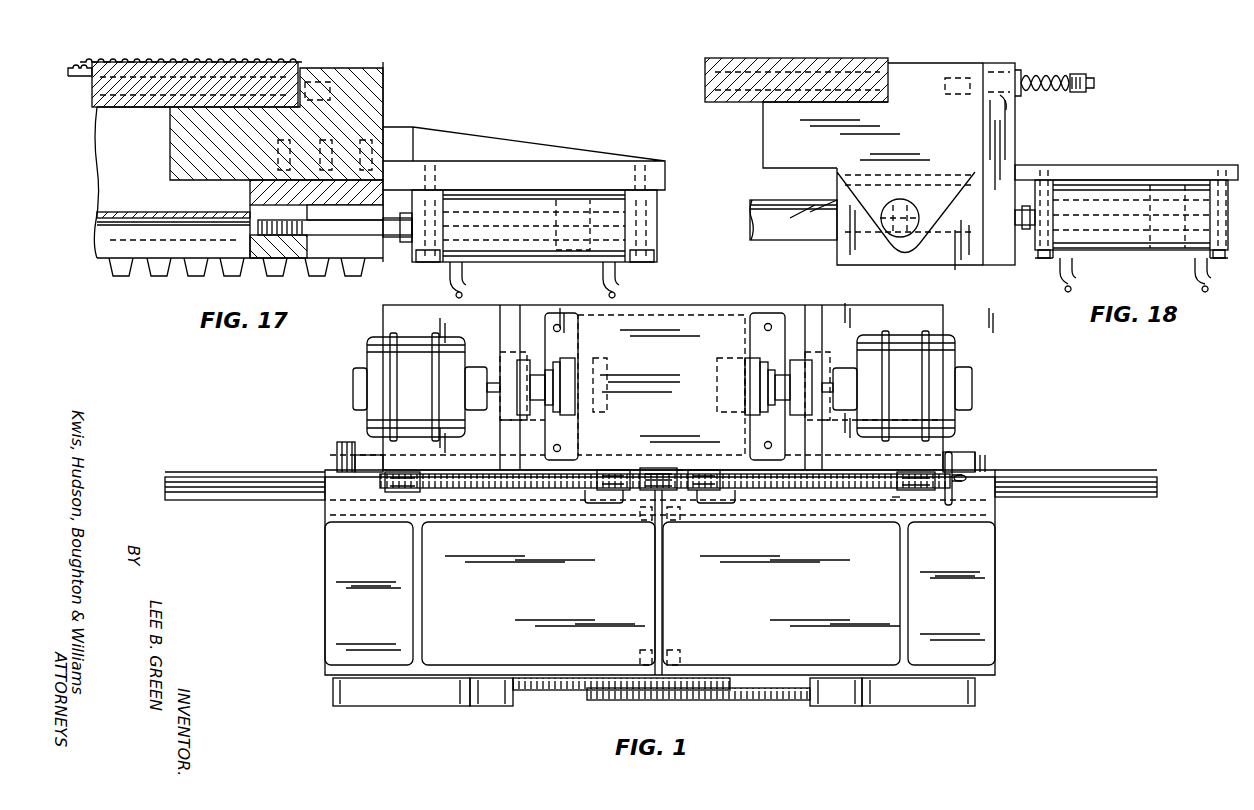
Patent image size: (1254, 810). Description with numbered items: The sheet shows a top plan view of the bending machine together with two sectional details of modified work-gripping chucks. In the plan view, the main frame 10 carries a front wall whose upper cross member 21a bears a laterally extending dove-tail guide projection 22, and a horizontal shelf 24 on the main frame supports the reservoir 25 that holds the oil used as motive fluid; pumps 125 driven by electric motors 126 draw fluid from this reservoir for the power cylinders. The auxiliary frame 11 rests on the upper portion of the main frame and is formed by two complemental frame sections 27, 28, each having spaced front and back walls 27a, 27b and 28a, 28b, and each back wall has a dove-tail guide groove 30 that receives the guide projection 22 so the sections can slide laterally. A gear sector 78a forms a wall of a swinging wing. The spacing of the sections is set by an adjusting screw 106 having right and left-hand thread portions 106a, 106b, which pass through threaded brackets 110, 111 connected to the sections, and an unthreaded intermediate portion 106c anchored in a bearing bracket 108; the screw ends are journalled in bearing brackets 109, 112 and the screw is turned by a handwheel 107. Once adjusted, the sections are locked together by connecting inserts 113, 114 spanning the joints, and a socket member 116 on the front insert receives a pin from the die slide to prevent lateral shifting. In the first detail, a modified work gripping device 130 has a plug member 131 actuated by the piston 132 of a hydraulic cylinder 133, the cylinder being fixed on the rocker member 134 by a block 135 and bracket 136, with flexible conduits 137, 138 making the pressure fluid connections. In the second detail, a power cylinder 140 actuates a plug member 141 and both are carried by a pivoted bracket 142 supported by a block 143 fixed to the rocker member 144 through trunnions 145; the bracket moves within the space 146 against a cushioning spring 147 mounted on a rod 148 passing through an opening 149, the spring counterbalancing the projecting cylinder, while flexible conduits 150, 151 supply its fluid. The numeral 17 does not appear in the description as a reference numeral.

In FIG. 1, the main frame 10 is at (900, 317).
In FIG. 1, the auxiliary frame 11 is at (998, 572).
In FIG. 17, the rail 17 is at (153, 212).
In FIG. 18, the rail 17 is at (774, 202).
In FIG. 1, the cross member 21a is at (1054, 472).
In FIG. 1, the guide projection 22 is at (1074, 494).
In FIG. 1, the shelf 24 is at (794, 318).
In FIG. 1, the reservoir 25 is at (706, 318).
In FIG. 1, the frame section 27 is at (330, 600).
In FIG. 1, the front wall 27a is at (544, 676).
In FIG. 1, the back wall 27b is at (524, 514).
In FIG. 1, the frame section 28 is at (992, 602).
In FIG. 1, the front wall 28a is at (846, 668).
In FIG. 1, the back wall 28b is at (793, 514).
In FIG. 1, the guide groove 30 is at (324, 516).
In FIG. 1, the gear sector 78a is at (570, 698).
In FIG. 1, the adjusting screw 106 is at (752, 498).
In FIG. 1, the right-hand thread portion 106a is at (535, 496).
In FIG. 1, the left-hand thread portion 106b is at (873, 496).
In FIG. 1, the unthreaded intermediate portion 106c is at (690, 468).
In FIG. 1, the handwheel 107 is at (955, 482).
In FIG. 1, the bearing bracket 108 is at (651, 468).
In FIG. 1, the bearing bracket 109 is at (386, 490).
In FIG. 1, the threaded bracket 110 is at (602, 470).
In FIG. 1, the threaded bracket 111 is at (712, 472).
In FIG. 1, the bearing bracket 112 is at (915, 472).
In FIG. 1, the connecting insert 113 is at (662, 650).
In FIG. 1, the connecting insert 114 is at (635, 527).
In FIG. 1, the socket member 116 is at (622, 672).
In FIG. 1, the pump 125 is at (695, 368).
In FIG. 1, the electric motor 126 is at (366, 360).
In FIG. 17, the work gripping device 130 is at (383, 108).
In FIG. 17, the plug member 131 is at (270, 261).
In FIG. 17, the piston 132 is at (570, 248).
In FIG. 17, the hydraulic cylinder 133 is at (487, 278).
In FIG. 17, the rocker member 134 is at (206, 66).
In FIG. 17, the block 135 is at (372, 69).
In FIG. 17, the bracket 136 is at (504, 175).
In FIG. 17, the flexible conduit 137 is at (446, 288).
In FIG. 17, the flexible conduit 138 is at (626, 284).
In FIG. 18, the power cylinder 140 is at (1103, 185).
In FIG. 18, the plug member 141 is at (830, 220).
In FIG. 18, the pivoted bracket 142 is at (1007, 118).
In FIG. 18, the block 143 is at (938, 44).
In FIG. 18, the rocker member 144 is at (836, 42).
In FIG. 18, the trunnion 145 is at (910, 212).
In FIG. 18, the space 146 is at (983, 64).
In FIG. 18, the cushioning spring 147 is at (1050, 68).
In FIG. 18, the rod 148 is at (1094, 80).
In FIG. 18, the opening 149 is at (1020, 106).
In FIG. 18, the flexible conduit 150 is at (1060, 277).
In FIG. 18, the flexible conduit 151 is at (1206, 276).